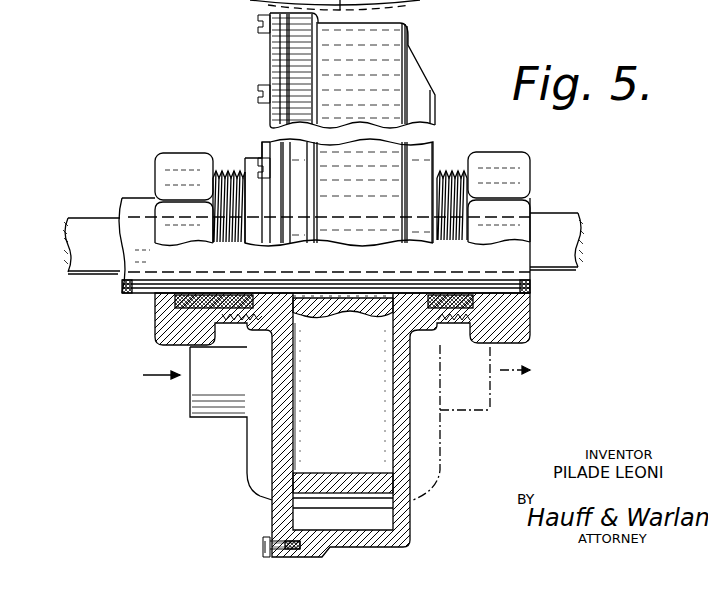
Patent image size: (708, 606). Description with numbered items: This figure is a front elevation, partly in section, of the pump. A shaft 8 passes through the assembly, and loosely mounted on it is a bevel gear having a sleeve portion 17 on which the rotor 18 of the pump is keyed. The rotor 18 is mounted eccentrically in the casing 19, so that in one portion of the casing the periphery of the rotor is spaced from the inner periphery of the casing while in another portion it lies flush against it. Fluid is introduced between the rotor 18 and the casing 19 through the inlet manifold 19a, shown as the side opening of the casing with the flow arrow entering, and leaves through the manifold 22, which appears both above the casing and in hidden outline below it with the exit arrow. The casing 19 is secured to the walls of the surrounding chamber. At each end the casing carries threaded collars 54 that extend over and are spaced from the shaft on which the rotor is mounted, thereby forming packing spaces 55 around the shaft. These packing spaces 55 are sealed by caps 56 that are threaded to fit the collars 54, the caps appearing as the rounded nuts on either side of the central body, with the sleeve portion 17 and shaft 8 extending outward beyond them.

The shaft 8 is at (72, 247).
The sleeve portion 17 is at (128, 212).
The rotor 18 is at (342, 400).
The casing 19 is at (408, 520).
The inlet manifold 19a is at (260, 443).
The manifold 22 is at (422, 98).
The threaded collars 54 is at (228, 168).
The packing spaces 55 is at (176, 345).
The caps 56 is at (157, 157).